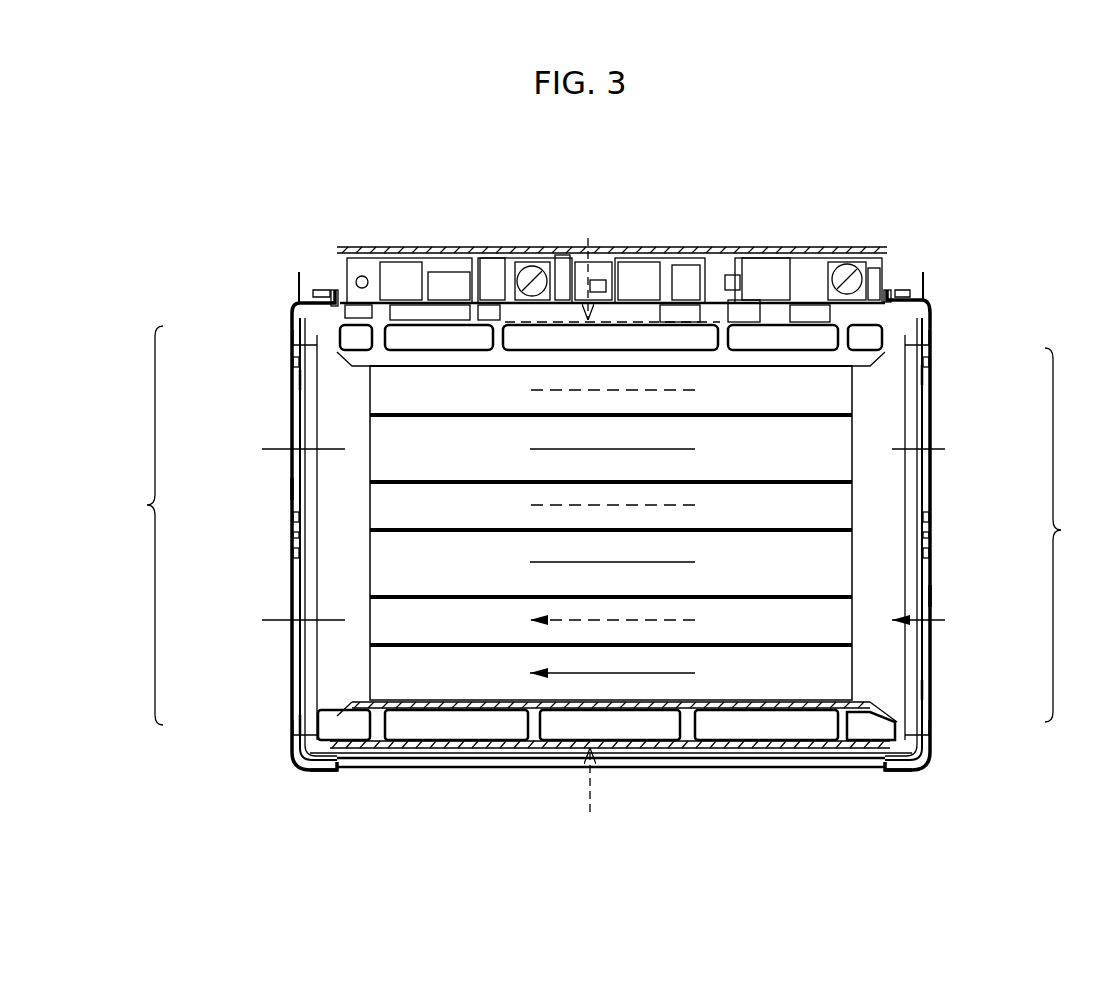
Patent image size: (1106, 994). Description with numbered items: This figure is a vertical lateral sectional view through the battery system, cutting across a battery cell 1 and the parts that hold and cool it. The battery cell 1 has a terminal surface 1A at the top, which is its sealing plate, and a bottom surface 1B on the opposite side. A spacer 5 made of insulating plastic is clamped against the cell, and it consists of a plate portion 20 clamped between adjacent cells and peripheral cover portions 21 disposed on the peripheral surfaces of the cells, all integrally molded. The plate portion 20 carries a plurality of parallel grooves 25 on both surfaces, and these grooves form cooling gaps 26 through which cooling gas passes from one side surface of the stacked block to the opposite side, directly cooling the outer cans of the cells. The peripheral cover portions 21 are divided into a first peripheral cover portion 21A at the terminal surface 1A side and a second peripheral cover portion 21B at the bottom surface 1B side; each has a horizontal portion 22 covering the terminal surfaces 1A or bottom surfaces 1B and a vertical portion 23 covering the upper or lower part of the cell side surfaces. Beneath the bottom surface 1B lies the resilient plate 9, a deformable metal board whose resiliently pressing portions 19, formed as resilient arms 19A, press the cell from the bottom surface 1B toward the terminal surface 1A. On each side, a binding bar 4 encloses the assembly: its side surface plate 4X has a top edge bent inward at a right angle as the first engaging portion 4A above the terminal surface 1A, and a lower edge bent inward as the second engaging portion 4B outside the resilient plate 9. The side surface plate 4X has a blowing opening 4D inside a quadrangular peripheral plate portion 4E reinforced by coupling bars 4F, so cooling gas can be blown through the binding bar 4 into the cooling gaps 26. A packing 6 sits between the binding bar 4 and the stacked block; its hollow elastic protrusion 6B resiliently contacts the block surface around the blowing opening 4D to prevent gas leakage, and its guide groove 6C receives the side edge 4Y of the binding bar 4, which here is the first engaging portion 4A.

The battery cell 1 is at (335, 475).
The terminal surface 1A is at (612, 265).
The bottom surface 1B is at (592, 795).
The binding bar 4 is at (270, 325).
The first engaging portion 4A is at (300, 290).
The side edge 4Y is at (616, 236).
The second engaging portion 4B is at (322, 772).
The blowing opening 4D is at (293, 488).
The peripheral plate portion 4E is at (300, 342).
The coupling bar 4F is at (293, 530).
The side surface plate 4X is at (601, 525).
The spacer 5 is at (611, 596).
The packing 6 is at (305, 573).
The elastic protrusion 6B is at (305, 378).
The guide groove 6C is at (293, 298).
The resilient plate 9 is at (657, 770).
The resiliently pressing portion 19 is at (422, 752).
The resilient arm 19A is at (611, 800).
The plate portion 20 is at (485, 625).
The peripheral cover portion 21 is at (360, 156).
The first peripheral cover portion 21A is at (440, 203).
The second peripheral cover portion 21B is at (565, 203).
The horizontal portion 22 is at (352, 268).
The vertical portion 23 is at (368, 735).
The groove 25 is at (757, 447).
The cooling gap 26 is at (637, 590).